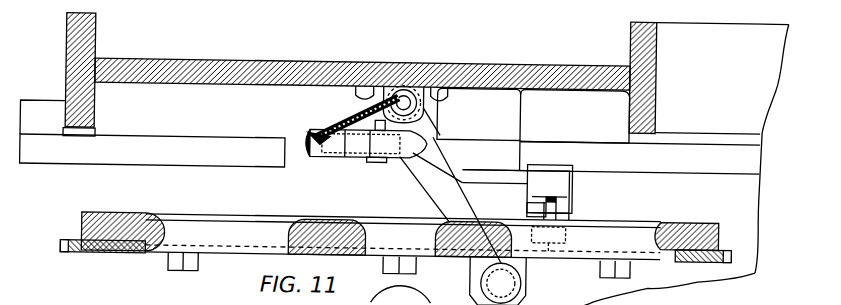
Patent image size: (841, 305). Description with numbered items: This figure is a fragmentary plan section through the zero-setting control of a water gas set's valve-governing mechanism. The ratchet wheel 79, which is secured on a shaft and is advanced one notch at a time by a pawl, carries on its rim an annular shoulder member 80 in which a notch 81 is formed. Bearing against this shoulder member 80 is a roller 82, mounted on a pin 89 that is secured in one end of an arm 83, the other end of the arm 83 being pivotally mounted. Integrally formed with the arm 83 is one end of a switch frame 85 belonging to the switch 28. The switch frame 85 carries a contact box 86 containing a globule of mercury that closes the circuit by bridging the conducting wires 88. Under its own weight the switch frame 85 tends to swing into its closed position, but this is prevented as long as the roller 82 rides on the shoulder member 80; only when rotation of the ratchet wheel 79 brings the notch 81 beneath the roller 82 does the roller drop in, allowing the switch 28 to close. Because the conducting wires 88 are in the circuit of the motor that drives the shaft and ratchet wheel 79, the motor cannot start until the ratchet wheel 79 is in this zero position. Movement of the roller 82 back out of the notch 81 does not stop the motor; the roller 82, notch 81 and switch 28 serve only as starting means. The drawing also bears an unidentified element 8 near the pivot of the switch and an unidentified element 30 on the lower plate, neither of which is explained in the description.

The pivot pin 8 is at (414, 85).
The switch 28 is at (345, 153).
The base plate 30 is at (152, 166).
The ratchet wheel 79 is at (722, 252).
The annular shoulder member 80 is at (722, 218).
The notch 81 is at (578, 232).
The roller 82 is at (562, 222).
The arm 83 is at (573, 197).
The switch frame 85 is at (472, 166).
The contact box 86 is at (413, 160).
The conducting wires 88 is at (320, 130).
The pin 89 is at (530, 203).